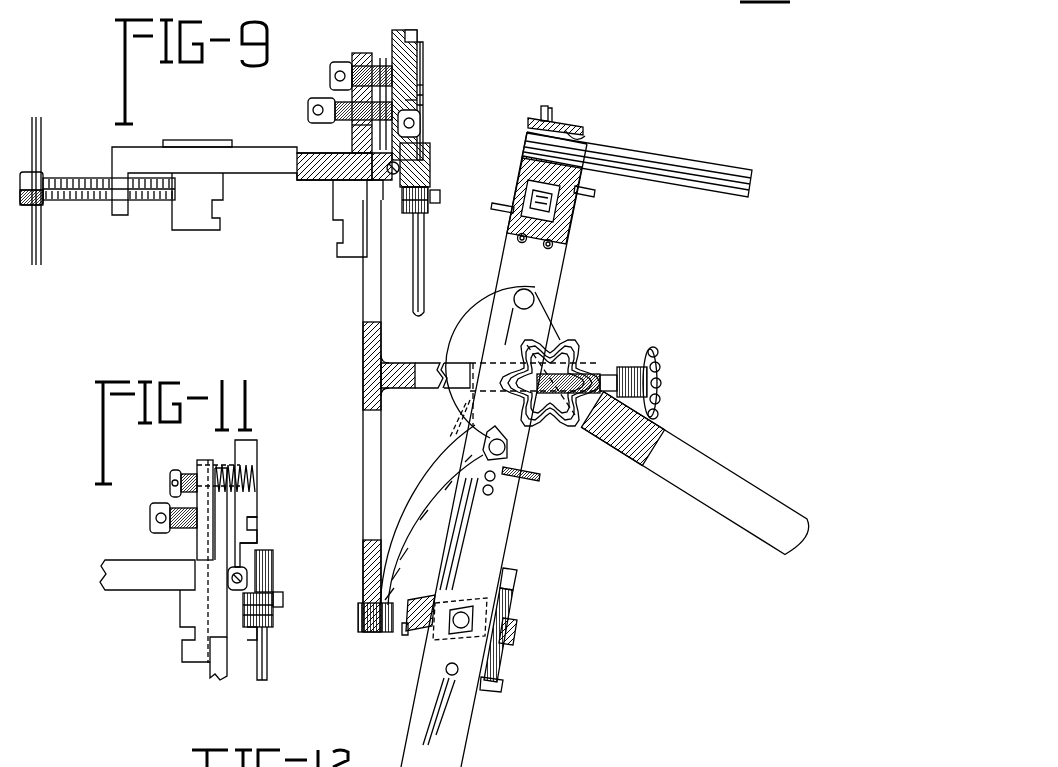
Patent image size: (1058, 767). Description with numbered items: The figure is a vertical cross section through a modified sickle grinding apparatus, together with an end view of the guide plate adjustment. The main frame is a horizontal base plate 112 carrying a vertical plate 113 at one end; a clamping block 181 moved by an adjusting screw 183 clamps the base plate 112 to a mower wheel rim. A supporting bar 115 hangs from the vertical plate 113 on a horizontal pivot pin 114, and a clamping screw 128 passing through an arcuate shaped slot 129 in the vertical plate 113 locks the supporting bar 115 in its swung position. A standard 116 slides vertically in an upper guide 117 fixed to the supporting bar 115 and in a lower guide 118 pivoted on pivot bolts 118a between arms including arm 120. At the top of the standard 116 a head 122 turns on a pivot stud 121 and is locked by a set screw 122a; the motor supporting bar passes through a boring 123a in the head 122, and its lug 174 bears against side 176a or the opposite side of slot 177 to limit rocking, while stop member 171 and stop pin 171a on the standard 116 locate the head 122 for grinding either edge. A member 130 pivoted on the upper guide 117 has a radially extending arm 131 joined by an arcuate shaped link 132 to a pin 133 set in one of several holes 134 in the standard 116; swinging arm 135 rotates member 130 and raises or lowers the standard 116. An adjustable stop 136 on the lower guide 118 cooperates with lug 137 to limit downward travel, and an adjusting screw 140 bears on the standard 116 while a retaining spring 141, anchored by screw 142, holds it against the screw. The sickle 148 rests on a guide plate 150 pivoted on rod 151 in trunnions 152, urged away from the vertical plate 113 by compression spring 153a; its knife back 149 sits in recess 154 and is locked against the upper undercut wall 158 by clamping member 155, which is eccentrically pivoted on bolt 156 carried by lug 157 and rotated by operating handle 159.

In FIG. 9, the base plate 112 is at (271, 168).
In FIG. 11, the base plate 112 is at (124, 578).
In FIG. 9, the vertical plate 113 is at (366, 60).
In FIG. 11, the vertical plate 113 is at (203, 543).
In FIG. 9, the horizontal pivot pin 114 is at (352, 63).
In FIG. 11, the horizontal pivot pin 114 is at (170, 482).
In FIG. 9, the supporting bar 115 is at (364, 512).
In FIG. 11, the supporting bar 115 is at (224, 665).
In FIG. 9, the standard 116 is at (536, 292).
In FIG. 9, the upper guide 117 is at (443, 372).
In FIG. 9, the lower guide 118 is at (416, 598).
In FIG. 9, the pivot bolts 118a is at (475, 599).
In FIG. 9, the arm 120 is at (404, 632).
In FIG. 9, the pivot stud 121 is at (528, 217).
In FIG. 9, the head 122 is at (563, 222).
In FIG. 9, the set screw 122a is at (582, 192).
In FIG. 9, the boring 123a is at (585, 140).
In FIG. 9, the clamping screw 128 is at (325, 100).
In FIG. 11, the clamping screw 128 is at (150, 518).
In FIG. 9, the arcuate shaped slot 129 is at (356, 136).
In FIG. 9, the member 130 is at (598, 351).
In FIG. 9, the radially extending arm 131 is at (540, 322).
In FIG. 9, the arcuate shaped link 132 is at (487, 318).
In FIG. 9, the pin 133 is at (500, 448).
In FIG. 9, the holes 134 is at (483, 490).
In FIG. 9, the arm 135 is at (722, 473).
In FIG. 9, the adjustable stop 136 is at (512, 603).
In FIG. 9, the lug 137 is at (530, 480).
In FIG. 9, the adjusting screw 140 is at (620, 366).
In FIG. 9, the retaining spring 141 is at (432, 464).
In FIG. 9, the screw 142 is at (384, 633).
In FIG. 9, the sickle 148 is at (440, 92).
In FIG. 9, the knife back 149 is at (419, 105).
In FIG. 9, the guide plate 150 is at (408, 31).
In FIG. 11, the guide plate 150 is at (250, 450).
In FIG. 9, the pivot rod 151 is at (390, 174).
In FIG. 11, the pivot rod 151 is at (234, 580).
In FIG. 9, the trunnions 152 is at (386, 178).
In FIG. 11, the compression spring 153a is at (256, 475).
In FIG. 9, the recess 154 is at (420, 128).
In FIG. 11, the recess 154 is at (255, 532).
In FIG. 9, the clamping member 155 is at (441, 167).
In FIG. 11, the clamping member 155 is at (282, 583).
In FIG. 9, the pivot bolt 156 is at (447, 190).
In FIG. 11, the pivot bolt 156 is at (283, 600).
In FIG. 9, the lug 157 is at (403, 216).
In FIG. 11, the lug 157 is at (253, 628).
In FIG. 9, the upper undercut wall 158 is at (432, 103).
In FIG. 9, the operating handle 159 is at (421, 272).
In FIG. 11, the operating handle 159 is at (273, 655).
In FIG. 9, the stop member 171 is at (517, 241).
In FIG. 9, the stop pin 171a is at (547, 249).
In FIG. 9, the lug 174 is at (550, 110).
In FIG. 9, the side of slot 176a is at (543, 110).
In FIG. 9, the slot 177 is at (527, 127).
In FIG. 9, the block 181 is at (195, 222).
In FIG. 9, the adjusting screw 183 is at (82, 201).